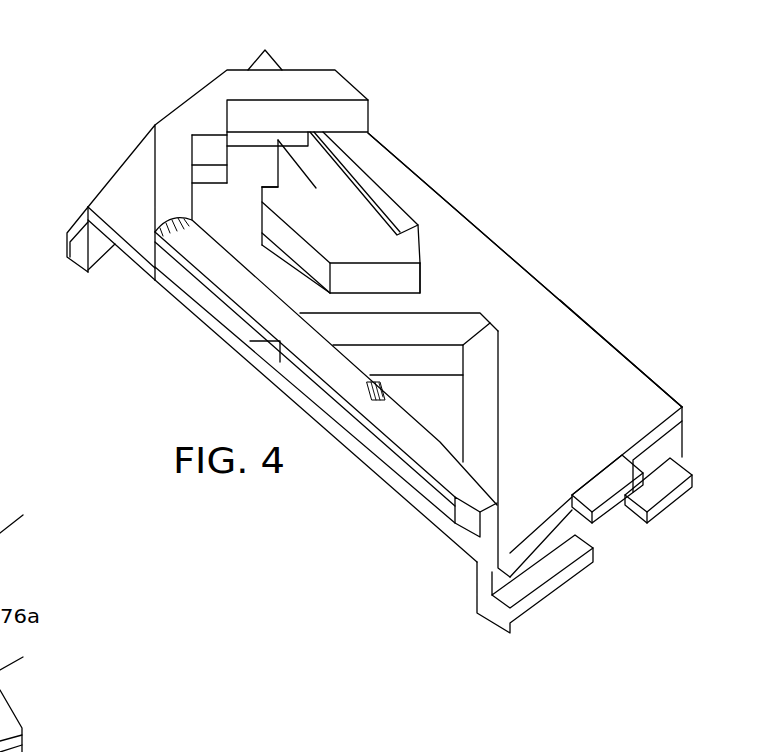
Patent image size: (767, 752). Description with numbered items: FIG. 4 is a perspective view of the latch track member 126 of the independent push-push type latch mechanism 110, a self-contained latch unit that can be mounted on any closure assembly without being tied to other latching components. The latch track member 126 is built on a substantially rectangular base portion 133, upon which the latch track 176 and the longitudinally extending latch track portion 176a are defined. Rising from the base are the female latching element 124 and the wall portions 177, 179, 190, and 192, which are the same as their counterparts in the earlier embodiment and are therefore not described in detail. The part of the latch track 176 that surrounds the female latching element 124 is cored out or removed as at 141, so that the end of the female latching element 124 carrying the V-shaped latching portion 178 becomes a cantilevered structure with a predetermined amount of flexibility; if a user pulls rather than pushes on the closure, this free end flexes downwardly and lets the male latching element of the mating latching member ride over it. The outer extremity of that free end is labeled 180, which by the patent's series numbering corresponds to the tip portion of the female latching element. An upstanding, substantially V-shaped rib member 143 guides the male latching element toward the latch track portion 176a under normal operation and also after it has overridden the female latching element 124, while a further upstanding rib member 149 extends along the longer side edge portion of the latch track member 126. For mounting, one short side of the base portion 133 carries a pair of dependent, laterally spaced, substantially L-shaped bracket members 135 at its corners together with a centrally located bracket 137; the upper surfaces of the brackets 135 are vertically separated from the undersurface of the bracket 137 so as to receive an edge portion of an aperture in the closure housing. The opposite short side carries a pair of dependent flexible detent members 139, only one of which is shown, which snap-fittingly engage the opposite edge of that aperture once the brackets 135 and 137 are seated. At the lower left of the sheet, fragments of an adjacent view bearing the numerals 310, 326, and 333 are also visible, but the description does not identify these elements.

The push-push type latch mechanism 110 is at (507, 127).
The female latching element 124 is at (353, 238).
The latch track member 126 is at (623, 352).
The base portion 133 is at (665, 428).
The L-shaped bracket members 135 is at (662, 485).
The centrally located bracket 137 is at (605, 490).
The flexible detent members 139 is at (70, 247).
The cored-out portion 141 is at (232, 220).
The V-shaped rib member 143 is at (410, 333).
The upstanding rib member 149 is at (318, 385).
The latch track 176 is at (390, 187).
The latch track portion 176a is at (512, 302).
The wall portion 177 is at (228, 118).
The V-shaped latching portion 178 is at (279, 187).
The wall portion 179 is at (287, 117).
The side face of block 180 is at (420, 279).
The wall portion 190 is at (192, 192).
The wall portion 192 is at (208, 147).
The fragment of adjacent figure 310 is at (31, 517).
The fragment of adjacent figure 326 is at (34, 657).
The fragment of adjacent figure 333 is at (24, 744).